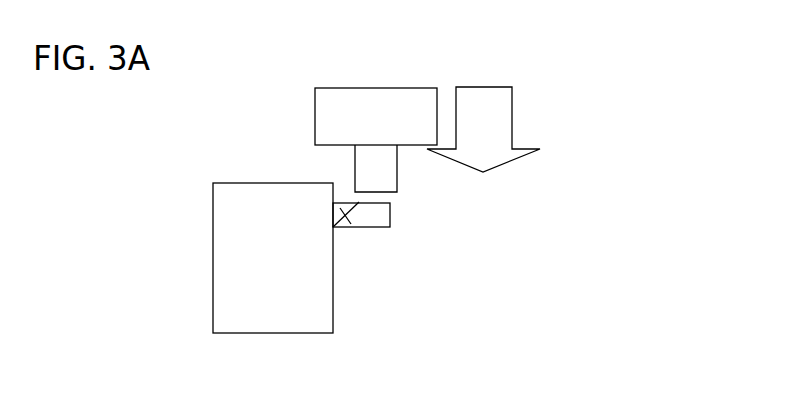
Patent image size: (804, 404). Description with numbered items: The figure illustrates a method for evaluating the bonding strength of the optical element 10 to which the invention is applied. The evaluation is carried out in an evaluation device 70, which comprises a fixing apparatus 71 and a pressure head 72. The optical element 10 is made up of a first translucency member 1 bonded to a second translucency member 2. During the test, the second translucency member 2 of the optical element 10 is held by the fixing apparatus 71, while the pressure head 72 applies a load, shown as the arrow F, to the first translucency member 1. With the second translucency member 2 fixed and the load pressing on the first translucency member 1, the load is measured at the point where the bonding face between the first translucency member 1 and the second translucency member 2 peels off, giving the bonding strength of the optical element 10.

The evaluation device 70 is at (185, 147).
The fixing apparatus 71 is at (225, 250).
The pressure head 72 is at (328, 112).
The first translucency member 1 is at (383, 213).
The second translucency member 2 is at (350, 232).
The optical element 10 is at (383, 252).